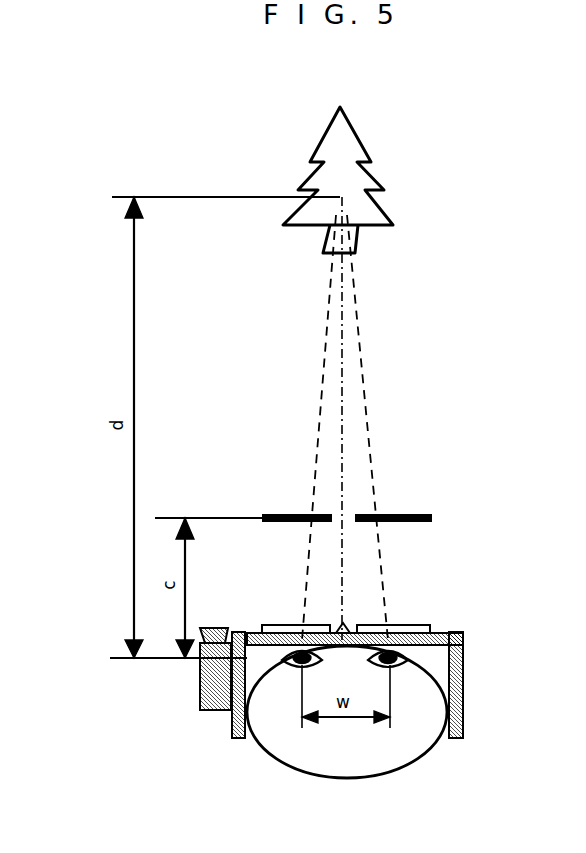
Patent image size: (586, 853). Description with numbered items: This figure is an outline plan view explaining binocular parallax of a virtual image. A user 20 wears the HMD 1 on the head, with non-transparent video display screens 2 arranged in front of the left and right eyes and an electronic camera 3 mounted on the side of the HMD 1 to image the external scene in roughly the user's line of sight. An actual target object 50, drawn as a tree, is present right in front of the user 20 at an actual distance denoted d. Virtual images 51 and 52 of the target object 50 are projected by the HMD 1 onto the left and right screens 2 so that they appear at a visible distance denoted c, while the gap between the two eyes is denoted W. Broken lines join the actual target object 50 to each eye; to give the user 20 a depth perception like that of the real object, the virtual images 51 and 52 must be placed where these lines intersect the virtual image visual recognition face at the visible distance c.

The HMD 1 is at (463, 690).
The video display screen 2 is at (284, 623).
The electronic camera 3 is at (210, 685).
The user 20 is at (320, 753).
The actual target object 50 is at (355, 182).
The virtual image 51 is at (308, 515).
The virtual image 52 is at (375, 515).